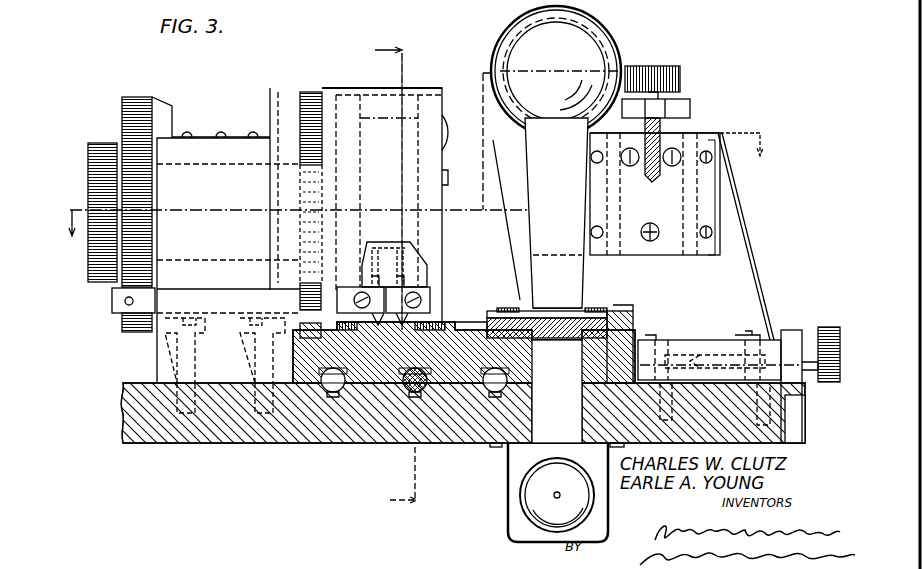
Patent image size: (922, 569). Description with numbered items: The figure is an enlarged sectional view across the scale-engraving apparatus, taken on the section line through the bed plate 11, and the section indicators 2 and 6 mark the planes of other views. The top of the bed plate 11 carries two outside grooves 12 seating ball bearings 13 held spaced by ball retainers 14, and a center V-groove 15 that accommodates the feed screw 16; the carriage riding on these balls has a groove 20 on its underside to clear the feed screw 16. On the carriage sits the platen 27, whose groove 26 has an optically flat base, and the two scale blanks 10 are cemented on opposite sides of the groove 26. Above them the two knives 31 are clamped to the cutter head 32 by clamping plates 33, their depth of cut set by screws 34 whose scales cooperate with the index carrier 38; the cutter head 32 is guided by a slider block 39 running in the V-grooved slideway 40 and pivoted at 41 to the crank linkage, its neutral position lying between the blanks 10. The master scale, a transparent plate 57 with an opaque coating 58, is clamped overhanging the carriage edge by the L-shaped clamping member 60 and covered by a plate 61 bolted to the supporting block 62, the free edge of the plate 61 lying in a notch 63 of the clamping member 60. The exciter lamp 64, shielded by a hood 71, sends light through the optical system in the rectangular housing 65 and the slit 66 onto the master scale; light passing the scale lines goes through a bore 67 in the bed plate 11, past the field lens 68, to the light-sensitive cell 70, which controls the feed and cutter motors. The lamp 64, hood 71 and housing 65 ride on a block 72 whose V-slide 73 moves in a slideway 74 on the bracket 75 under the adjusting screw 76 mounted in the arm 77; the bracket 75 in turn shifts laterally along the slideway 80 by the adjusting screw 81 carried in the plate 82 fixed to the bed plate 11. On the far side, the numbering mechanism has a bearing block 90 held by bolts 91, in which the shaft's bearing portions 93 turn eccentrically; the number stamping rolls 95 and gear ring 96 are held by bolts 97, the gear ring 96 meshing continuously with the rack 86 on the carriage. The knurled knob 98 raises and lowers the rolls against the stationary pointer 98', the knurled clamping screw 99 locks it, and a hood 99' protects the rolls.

The section line 2- 2 is at (415, 194).
The section line 6- 6 is at (389, 275).
The scale blanks 10 is at (345, 323).
The bed plate 11 is at (168, 430).
The outside grooves 12 is at (338, 392).
The ball bearings 13 is at (322, 395).
The ball retainers 14 is at (325, 386).
The center V-groove 15 is at (402, 397).
The feed screw 16 is at (413, 392).
The groove 20 is at (335, 395).
The groove 26 is at (443, 327).
The platen 27 is at (292, 358).
The knives 31 is at (420, 283).
The cutter head 32 is at (412, 265).
The clamping plates 33 is at (356, 288).
The screws 34 is at (405, 270).
The index carrier 38 is at (396, 248).
The slider block 39 is at (296, 298).
The V-grooved slideway 40 is at (209, 291).
The pivot 41 is at (125, 303).
The transparent plate 57 is at (590, 316).
The opaque coating 58 is at (522, 332).
The L-shaped clamping member 60 is at (475, 345).
The plate 61 is at (600, 318).
The supporting block 62 is at (630, 308).
The notch 63 is at (500, 310).
The exciter lamp 64 is at (560, 71).
The rectangular housing 65 is at (556, 213).
The slit 66 is at (580, 307).
The bore 67 is at (557, 391).
The field lens 68 is at (571, 352).
The light-sensitive cell 70 is at (515, 492).
The hood 71 is at (496, 47).
The block 72 is at (516, 178).
The V-slide 73 is at (689, 142).
The slideway 74 is at (714, 140).
The bracket 75 is at (716, 300).
The adjusting screw 76 is at (660, 66).
The arm 77 is at (690, 110).
The slideway 80 is at (771, 338).
The adjusting screw 81 is at (830, 326).
The plate 82 is at (793, 330).
The rack 86 is at (296, 328).
The bearing block 90 is at (327, 235).
The bolts 91 is at (253, 370).
The bearing portions 93 is at (242, 166).
The number stamping rolls 95 is at (420, 96).
The gear ring 96 is at (310, 93).
The bolts 97 is at (445, 118).
The knurled knob 98 is at (123, 214).
The stationary pointer 98' is at (211, 110).
The knurled clamping screw 99 is at (89, 210).
The hood 99' is at (382, 63).